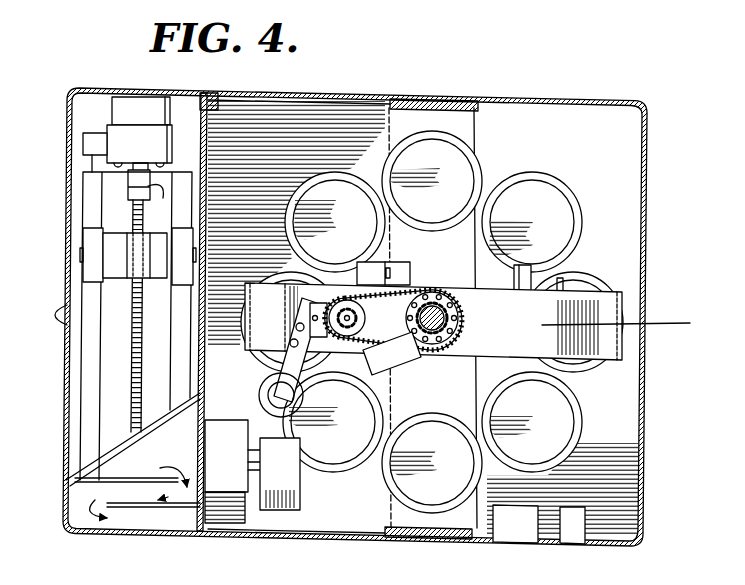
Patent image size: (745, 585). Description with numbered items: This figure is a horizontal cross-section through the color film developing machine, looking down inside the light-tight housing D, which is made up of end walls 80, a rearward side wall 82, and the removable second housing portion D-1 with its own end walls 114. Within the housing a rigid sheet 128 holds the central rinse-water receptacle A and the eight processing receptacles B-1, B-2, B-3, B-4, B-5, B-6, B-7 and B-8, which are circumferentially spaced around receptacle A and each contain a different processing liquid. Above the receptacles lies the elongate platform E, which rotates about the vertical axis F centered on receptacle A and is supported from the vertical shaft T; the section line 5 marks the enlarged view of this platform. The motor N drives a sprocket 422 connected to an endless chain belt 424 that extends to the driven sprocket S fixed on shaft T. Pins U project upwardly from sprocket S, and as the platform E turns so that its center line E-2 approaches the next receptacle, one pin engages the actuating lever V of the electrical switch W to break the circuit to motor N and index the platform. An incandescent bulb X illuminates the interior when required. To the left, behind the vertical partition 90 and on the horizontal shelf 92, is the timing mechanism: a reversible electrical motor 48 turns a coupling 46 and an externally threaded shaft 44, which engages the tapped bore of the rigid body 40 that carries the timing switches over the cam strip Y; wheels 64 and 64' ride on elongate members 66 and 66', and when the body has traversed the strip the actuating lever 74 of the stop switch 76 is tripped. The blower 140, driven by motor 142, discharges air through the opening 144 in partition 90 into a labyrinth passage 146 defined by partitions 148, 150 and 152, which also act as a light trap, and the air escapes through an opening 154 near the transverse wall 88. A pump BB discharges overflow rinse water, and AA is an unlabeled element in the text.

The light-tight housing D is at (104, 84).
The second housing portion D-1 is at (648, 254).
The section line 5- 5 is at (407, 225).
The end walls 80 is at (566, 97).
The end walls of second housing portion 114 is at (591, 102).
The rearward side wall 82 is at (640, 485).
The receptacle B-1 is at (300, 271).
The receptacle B-2 is at (328, 466).
The receptacle B-3 is at (400, 506).
The receptacle B-4 is at (577, 427).
The receptacle B-5 is at (608, 281).
The receptacle B-6 is at (560, 198).
The receptacle B-7 is at (486, 164).
The receptacle B-8 is at (366, 181).
The sprocket 422 is at (355, 281).
The endless chain belt 424 is at (414, 286).
The platform E is at (433, 321).
The center line of platform E-2 is at (656, 326).
The vertical axis F is at (440, 305).
The sprocket S is at (455, 313).
The vertical shaft T is at (349, 320).
The pins U is at (459, 339).
The actuating lever V is at (428, 358).
The receptacle A is at (476, 356).
The electrical switch W is at (403, 373).
The motor N is at (340, 378).
The incandescent bulb X is at (262, 400).
The blower 140 is at (270, 350).
The reversible electrical motor 48 is at (139, 132).
The stop switch 76 is at (83, 144).
The actuating lever 74 is at (85, 165).
The externally threaded shaft 44 is at (142, 347).
The coupling 46 is at (157, 205).
The elongate member 66 is at (111, 326).
The rigid body 40 is at (135, 270).
The wheel 64 is at (57, 284).
The horizontal shelf 92 is at (82, 222).
The transversely extending continuous wall 88 is at (67, 345).
The cam strip Y is at (117, 375).
The partition 150 is at (100, 476).
The partition 152 is at (112, 486).
The labyrinth passage 146 is at (82, 498).
The opening 154 is at (160, 536).
The partition 148 is at (148, 433).
The opening 144 is at (204, 442).
The motor 142 is at (280, 474).
The sheet 128 is at (317, 517).
The wheel 64' is at (235, 251).
The elongate member 66' is at (208, 312).
The vertical partition 90 is at (205, 327).
The pump BB is at (518, 527).
The foot block AA is at (575, 530).